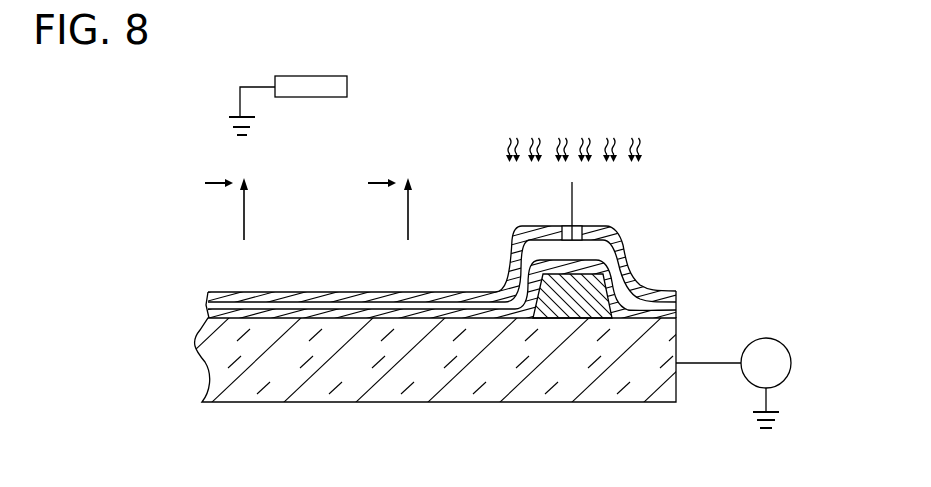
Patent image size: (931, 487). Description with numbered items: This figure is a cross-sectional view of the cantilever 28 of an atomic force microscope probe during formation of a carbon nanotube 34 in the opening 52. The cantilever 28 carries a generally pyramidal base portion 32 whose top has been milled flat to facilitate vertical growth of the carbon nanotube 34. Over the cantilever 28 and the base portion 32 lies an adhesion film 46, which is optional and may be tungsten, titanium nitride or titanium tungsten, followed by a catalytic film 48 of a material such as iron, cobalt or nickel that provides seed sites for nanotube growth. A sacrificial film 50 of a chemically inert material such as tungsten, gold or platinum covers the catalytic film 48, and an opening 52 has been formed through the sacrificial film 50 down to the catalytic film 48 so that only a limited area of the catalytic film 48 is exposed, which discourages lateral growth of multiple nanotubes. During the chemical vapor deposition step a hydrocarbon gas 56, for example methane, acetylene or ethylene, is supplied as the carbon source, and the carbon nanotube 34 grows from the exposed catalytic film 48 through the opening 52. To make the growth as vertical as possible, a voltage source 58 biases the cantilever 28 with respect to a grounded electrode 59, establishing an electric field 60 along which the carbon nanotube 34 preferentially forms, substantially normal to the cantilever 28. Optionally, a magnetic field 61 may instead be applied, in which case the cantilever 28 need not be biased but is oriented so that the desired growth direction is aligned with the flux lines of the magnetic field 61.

The cantilever 28 is at (677, 393).
The base portion 32 is at (568, 288).
The carbon nanotube 34 is at (568, 192).
The adhesion film 46 is at (677, 306).
The catalytic film 48 is at (677, 294).
The sacrificial film 50 is at (637, 278).
The opening 52 is at (577, 232).
The hydrocarbon gas 56 is at (641, 155).
The voltage source 58 is at (791, 359).
The grounded electrode 59 is at (302, 76).
The electric field 60 is at (408, 232).
The magnetic field 61 is at (244, 232).